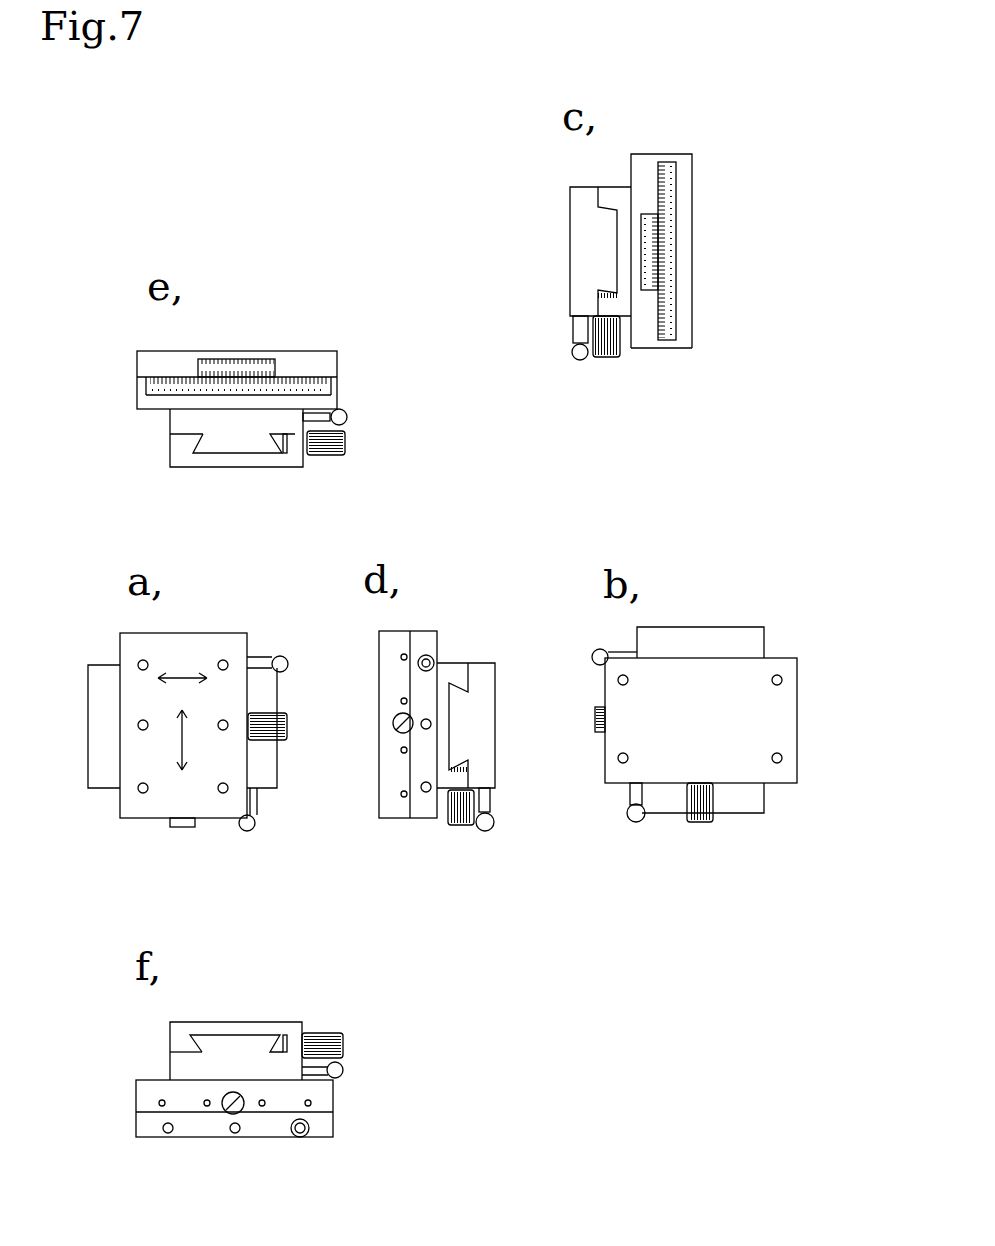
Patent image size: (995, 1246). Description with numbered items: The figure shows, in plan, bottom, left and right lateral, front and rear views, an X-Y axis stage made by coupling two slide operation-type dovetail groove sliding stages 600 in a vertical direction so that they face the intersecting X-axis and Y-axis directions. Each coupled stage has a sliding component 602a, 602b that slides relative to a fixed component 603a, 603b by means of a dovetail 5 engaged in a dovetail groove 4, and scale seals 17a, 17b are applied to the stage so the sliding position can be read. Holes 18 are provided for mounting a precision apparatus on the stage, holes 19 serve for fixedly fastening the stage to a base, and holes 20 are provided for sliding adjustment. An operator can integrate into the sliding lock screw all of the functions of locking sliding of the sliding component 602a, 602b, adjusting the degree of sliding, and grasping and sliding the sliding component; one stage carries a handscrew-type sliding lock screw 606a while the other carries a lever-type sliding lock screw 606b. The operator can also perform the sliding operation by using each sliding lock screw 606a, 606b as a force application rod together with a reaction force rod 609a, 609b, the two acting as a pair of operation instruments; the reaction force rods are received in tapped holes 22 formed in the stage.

The dovetail groove 4 is at (223, 448).
The dovetail 5 is at (260, 443).
The scale seal 17a is at (160, 378).
The scale seal 17b is at (213, 359).
The hole for mounting a precision apparatus 18 is at (138, 663).
The hole for fixedly fastening to a base 19 is at (780, 677).
The hole for sliding adjustment 20 is at (402, 657).
The tapped hole for reaction force rod 22 is at (433, 723).
The slide operation-type dovetail groove sliding stage 600 is at (579, 514).
The sliding component 602a is at (177, 458).
The sliding component 602b is at (328, 402).
The fixed component 603a is at (192, 423).
The fixed component 603b is at (320, 360).
The handscrew-type sliding lock screw 606a is at (347, 448).
The lever-type sliding lock screw 606b is at (463, 827).
The reaction force rod 609a is at (347, 418).
The reaction force rod 609b is at (488, 828).